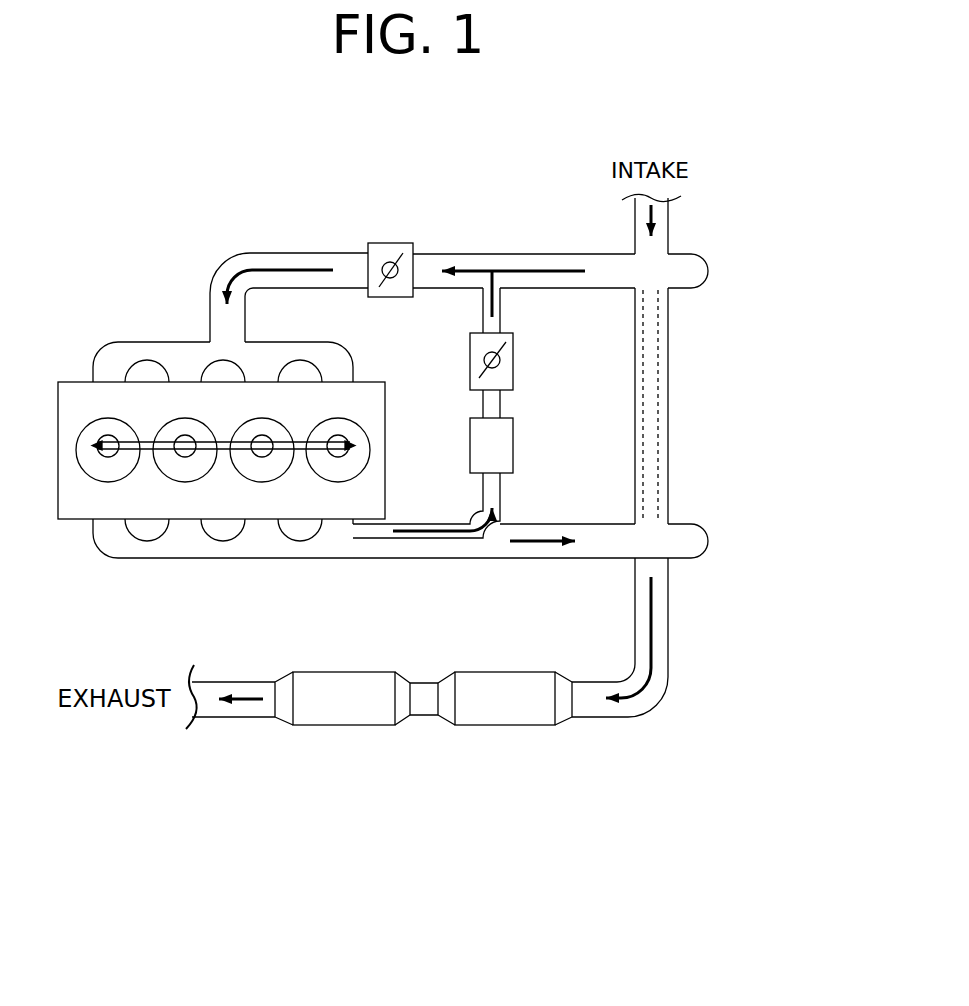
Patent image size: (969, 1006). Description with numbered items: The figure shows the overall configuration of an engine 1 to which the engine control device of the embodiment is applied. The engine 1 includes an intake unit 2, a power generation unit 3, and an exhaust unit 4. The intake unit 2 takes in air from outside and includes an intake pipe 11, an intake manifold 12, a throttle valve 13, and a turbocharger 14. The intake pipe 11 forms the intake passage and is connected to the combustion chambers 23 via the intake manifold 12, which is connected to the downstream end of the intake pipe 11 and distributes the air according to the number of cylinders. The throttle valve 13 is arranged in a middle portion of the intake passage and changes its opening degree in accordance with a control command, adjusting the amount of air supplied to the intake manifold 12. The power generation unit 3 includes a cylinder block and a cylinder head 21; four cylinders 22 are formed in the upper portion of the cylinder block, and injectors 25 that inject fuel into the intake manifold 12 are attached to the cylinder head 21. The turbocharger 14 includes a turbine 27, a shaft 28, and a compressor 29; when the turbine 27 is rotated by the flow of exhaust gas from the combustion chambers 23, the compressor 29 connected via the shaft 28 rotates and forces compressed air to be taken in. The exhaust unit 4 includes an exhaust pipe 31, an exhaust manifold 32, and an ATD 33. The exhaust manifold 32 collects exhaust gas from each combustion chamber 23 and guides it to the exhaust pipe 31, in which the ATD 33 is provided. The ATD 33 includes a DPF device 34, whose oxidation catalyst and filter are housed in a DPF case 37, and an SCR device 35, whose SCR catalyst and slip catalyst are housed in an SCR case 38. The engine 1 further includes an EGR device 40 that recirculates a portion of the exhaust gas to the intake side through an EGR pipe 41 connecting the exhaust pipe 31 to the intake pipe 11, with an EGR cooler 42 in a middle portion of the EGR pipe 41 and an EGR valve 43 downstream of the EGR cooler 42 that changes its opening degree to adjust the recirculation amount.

The engine 1 is at (133, 196).
The intake unit 2 is at (181, 259).
The power generation unit 3 is at (406, 391).
The exhaust unit 4 is at (471, 712).
The intake pipe 11 is at (462, 253).
The intake manifold 12 is at (115, 346).
The throttle valve 13 is at (390, 243).
The turbocharger 14 is at (682, 359).
The cylinder head 21 is at (380, 495).
The cylinders 22 is at (121, 488).
The combustion chamber 23 is at (355, 462).
The injectors 25 is at (106, 432).
The turbine 27 is at (681, 563).
The shaft 28 is at (660, 455).
The compressor 29 is at (679, 247).
The exhaust pipe 31 is at (635, 612).
The exhaust manifold 32 is at (117, 553).
The ATD 33 is at (580, 763).
The DPF device 34 is at (504, 669).
The SCR device 35 is at (344, 669).
The DPF case 37 is at (502, 713).
The SCR case 38 is at (340, 712).
The EGR device 40 is at (484, 413).
The EGR pipe 41 is at (502, 497).
The EGR cooler 42 is at (513, 447).
The EGR valve 43 is at (513, 360).